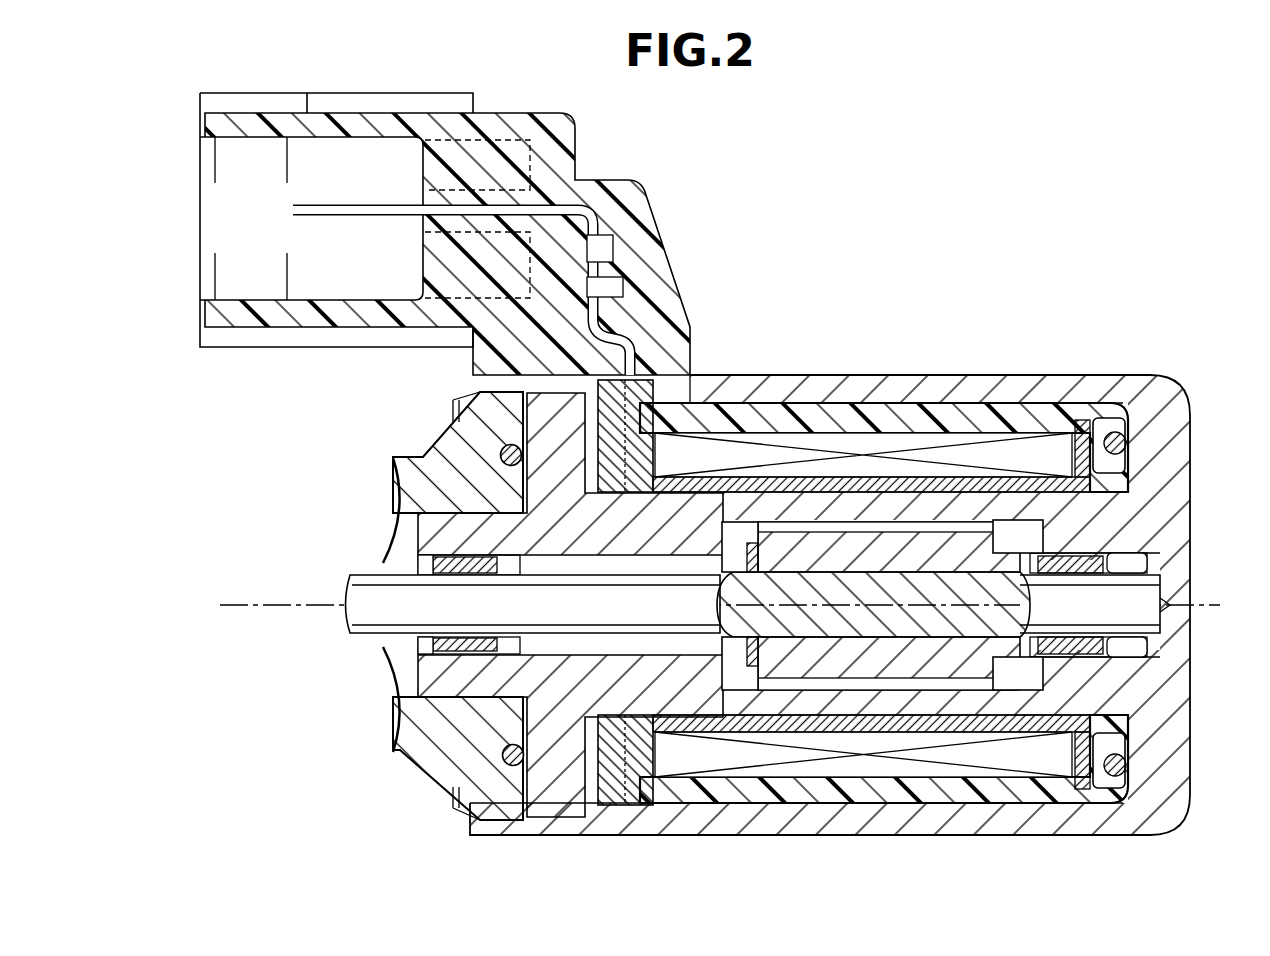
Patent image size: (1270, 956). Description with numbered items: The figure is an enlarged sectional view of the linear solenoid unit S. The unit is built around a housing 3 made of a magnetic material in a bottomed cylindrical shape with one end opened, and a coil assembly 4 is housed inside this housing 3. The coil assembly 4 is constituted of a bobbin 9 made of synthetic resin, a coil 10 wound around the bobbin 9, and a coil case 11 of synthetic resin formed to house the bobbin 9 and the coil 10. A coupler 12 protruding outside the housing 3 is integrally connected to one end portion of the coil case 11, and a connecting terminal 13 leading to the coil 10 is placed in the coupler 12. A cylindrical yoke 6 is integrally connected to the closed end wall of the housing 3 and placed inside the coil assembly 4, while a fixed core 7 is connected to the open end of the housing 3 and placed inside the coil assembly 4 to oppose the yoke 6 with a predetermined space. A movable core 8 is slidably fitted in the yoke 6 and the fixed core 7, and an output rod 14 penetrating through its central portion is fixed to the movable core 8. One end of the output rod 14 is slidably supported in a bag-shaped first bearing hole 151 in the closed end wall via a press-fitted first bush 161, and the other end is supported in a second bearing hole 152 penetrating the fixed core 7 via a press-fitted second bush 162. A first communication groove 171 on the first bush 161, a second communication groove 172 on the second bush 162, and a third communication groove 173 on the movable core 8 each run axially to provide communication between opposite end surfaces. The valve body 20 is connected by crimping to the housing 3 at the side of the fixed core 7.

The coupler 12 is at (220, 130).
The connecting terminal 13 is at (313, 210).
The valve body 20 is at (443, 457).
The linear solenoid unit S is at (840, 368).
The housing 3 is at (788, 380).
The coil assembly 4 is at (1068, 303).
The coil case 11 is at (936, 408).
The coil 10 is at (991, 445).
The bobbin 9 is at (1053, 470).
The fixed core 7 is at (667, 503).
The second bearing hole 152 is at (615, 566).
The second communication groove 172 is at (415, 549).
The output rod 14 is at (373, 622).
The second bush 162 is at (465, 648).
The yoke 6 is at (848, 513).
The third communication groove 173 is at (893, 517).
The movable core 8 is at (883, 672).
The first communication groove 171 is at (1070, 566).
The first bearing hole 151 is at (1150, 568).
The first bush 161 is at (1070, 647).